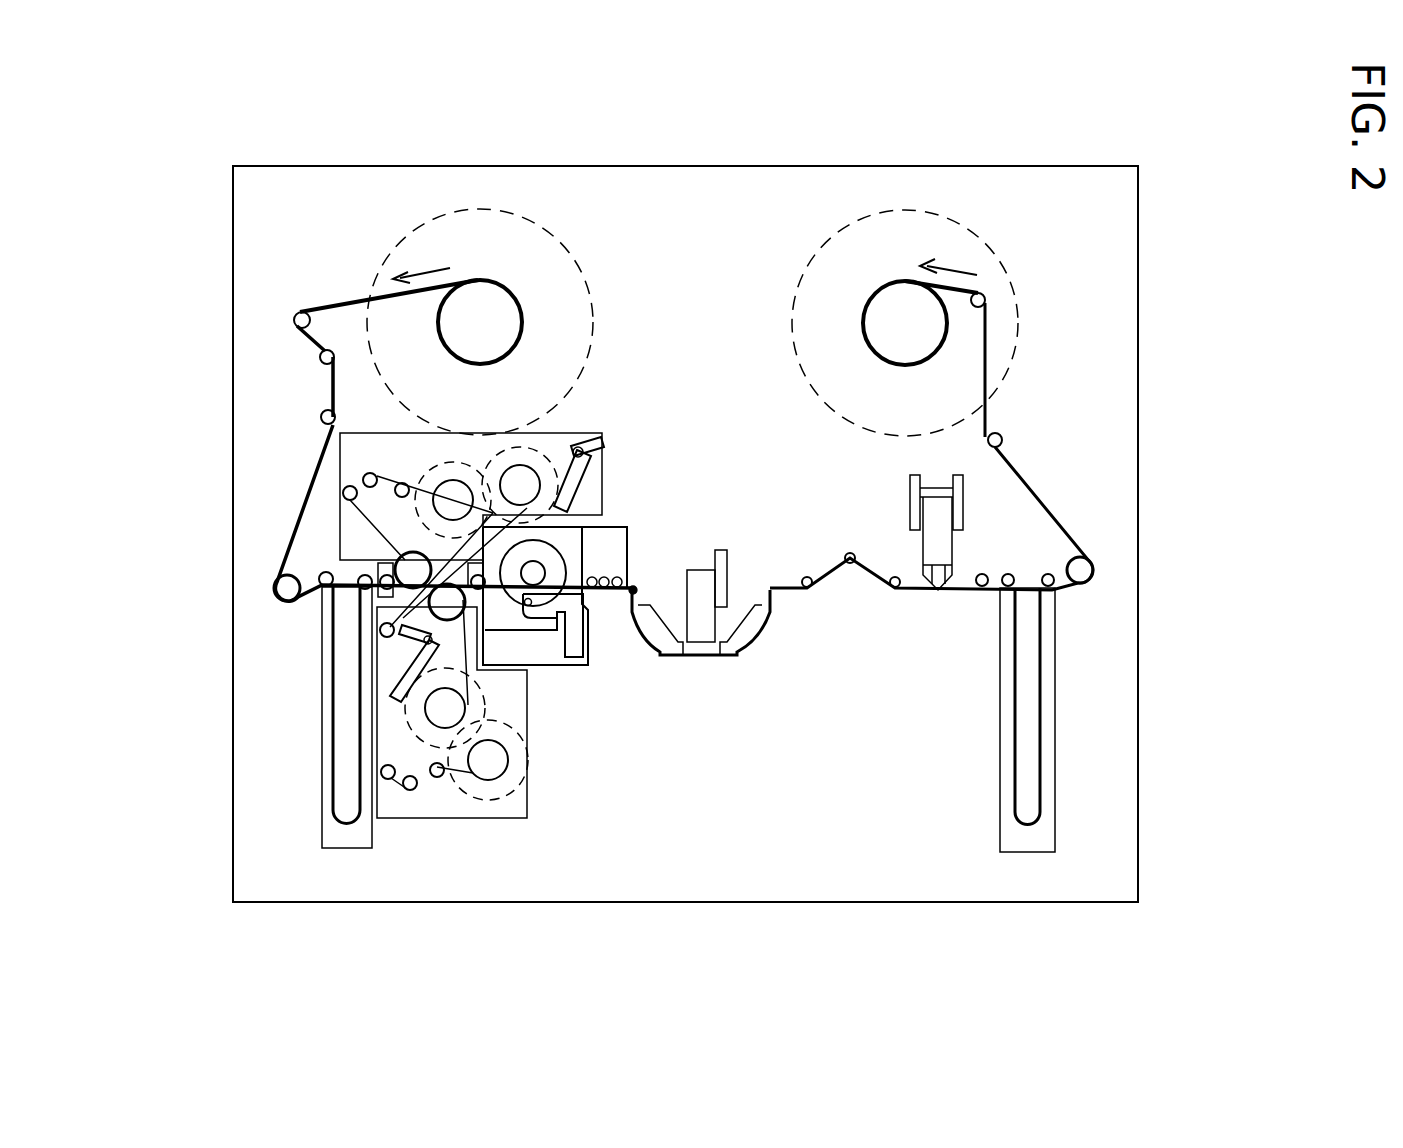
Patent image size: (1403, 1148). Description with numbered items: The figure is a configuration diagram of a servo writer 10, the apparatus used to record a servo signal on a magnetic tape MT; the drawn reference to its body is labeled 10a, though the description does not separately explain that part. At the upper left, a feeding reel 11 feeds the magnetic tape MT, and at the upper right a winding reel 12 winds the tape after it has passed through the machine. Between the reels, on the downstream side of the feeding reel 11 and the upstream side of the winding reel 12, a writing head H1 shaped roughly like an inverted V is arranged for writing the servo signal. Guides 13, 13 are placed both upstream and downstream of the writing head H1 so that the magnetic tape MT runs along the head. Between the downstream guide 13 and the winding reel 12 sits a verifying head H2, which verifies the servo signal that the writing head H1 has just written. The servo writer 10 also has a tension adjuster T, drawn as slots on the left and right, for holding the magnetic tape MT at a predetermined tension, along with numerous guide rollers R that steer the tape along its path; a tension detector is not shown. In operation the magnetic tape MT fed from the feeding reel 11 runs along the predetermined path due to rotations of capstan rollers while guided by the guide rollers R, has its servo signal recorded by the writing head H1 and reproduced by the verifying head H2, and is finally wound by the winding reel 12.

The servo writer 10 is at (699, 283).
The apparatus body 10a is at (852, 803).
The feeding reel 11 is at (478, 300).
The winding reel 12 is at (898, 300).
The guide 13 is at (655, 655).
The writing head H1 is at (703, 650).
The verifying head H2 is at (938, 600).
The magnetic tape MT is at (340, 305).
The guide roller R is at (322, 417).
The tension adjuster T is at (311, 729).